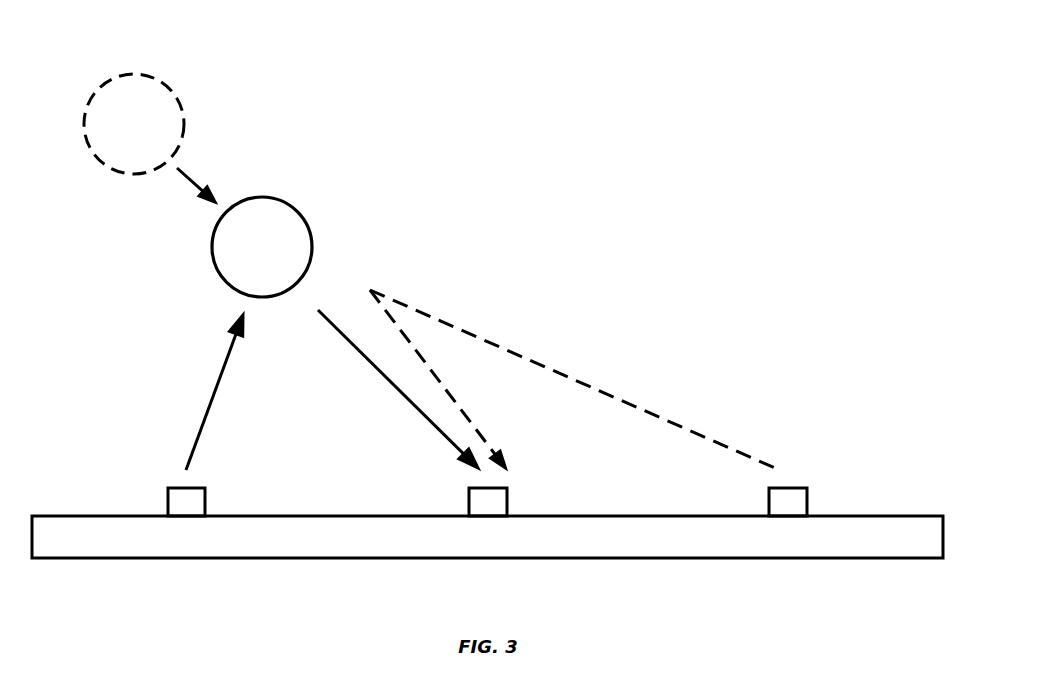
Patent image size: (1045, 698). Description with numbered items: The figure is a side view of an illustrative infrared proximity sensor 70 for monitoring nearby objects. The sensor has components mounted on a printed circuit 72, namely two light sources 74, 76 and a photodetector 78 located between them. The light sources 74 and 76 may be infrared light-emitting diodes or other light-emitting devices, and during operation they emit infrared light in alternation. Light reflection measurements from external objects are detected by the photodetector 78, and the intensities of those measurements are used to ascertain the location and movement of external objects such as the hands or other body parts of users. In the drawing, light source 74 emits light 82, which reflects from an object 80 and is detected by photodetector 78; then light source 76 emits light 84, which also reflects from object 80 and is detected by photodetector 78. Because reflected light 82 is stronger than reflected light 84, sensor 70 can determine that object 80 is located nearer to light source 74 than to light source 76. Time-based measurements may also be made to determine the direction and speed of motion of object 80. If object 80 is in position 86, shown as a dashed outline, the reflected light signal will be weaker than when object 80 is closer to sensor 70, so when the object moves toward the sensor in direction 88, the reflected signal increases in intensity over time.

The infrared proximity sensor 70 is at (802, 197).
The printed circuit 72 is at (489, 545).
The light source 74 is at (198, 500).
The light source 76 is at (800, 500).
The photodetector 78 is at (500, 500).
The object 80 is at (258, 205).
The light 82 is at (400, 392).
The light 84 is at (512, 355).
The position 86 is at (135, 73).
The direction 88 is at (188, 178).